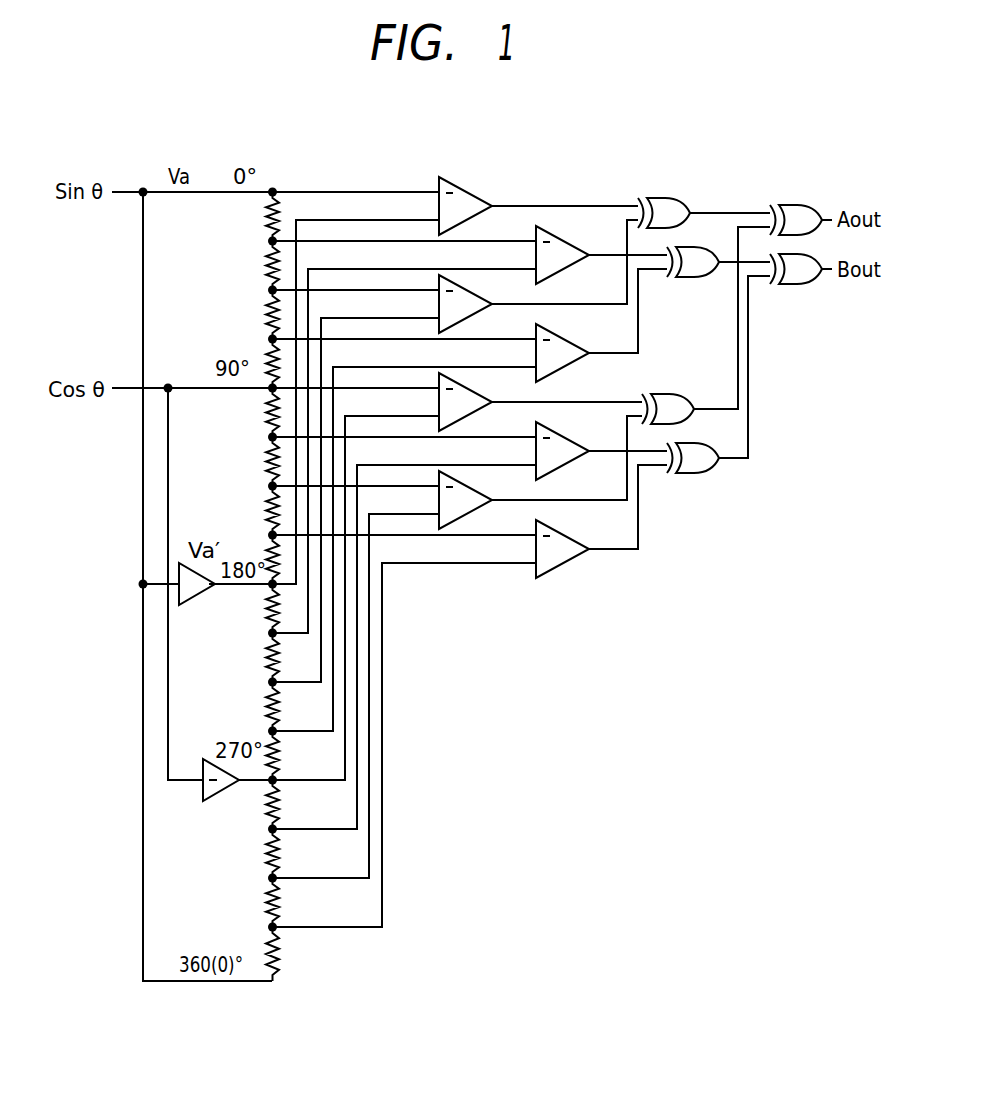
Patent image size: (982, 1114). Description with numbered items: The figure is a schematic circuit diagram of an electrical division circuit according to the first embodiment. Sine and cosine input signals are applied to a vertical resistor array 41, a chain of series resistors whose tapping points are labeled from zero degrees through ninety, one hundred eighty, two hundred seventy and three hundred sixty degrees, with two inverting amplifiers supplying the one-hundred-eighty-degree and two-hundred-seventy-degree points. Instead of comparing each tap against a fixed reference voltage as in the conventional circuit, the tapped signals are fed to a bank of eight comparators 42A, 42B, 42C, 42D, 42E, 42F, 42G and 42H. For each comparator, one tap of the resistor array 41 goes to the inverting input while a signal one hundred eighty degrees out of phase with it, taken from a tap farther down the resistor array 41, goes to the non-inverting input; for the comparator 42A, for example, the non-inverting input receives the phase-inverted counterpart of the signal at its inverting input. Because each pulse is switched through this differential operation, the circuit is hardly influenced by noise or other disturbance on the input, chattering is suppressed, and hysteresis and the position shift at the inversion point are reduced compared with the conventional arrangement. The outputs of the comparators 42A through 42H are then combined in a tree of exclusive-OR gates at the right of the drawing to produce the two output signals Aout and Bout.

The resistor array 41 is at (280, 185).
The comparator 42A is at (481, 206).
The comparator 42B is at (573, 255).
The comparator 42C is at (481, 304).
The comparator 42D is at (573, 353).
The comparator 42E is at (481, 402).
The comparator 42F is at (573, 451).
The comparator 42G is at (481, 500).
The comparator 42H is at (573, 549).